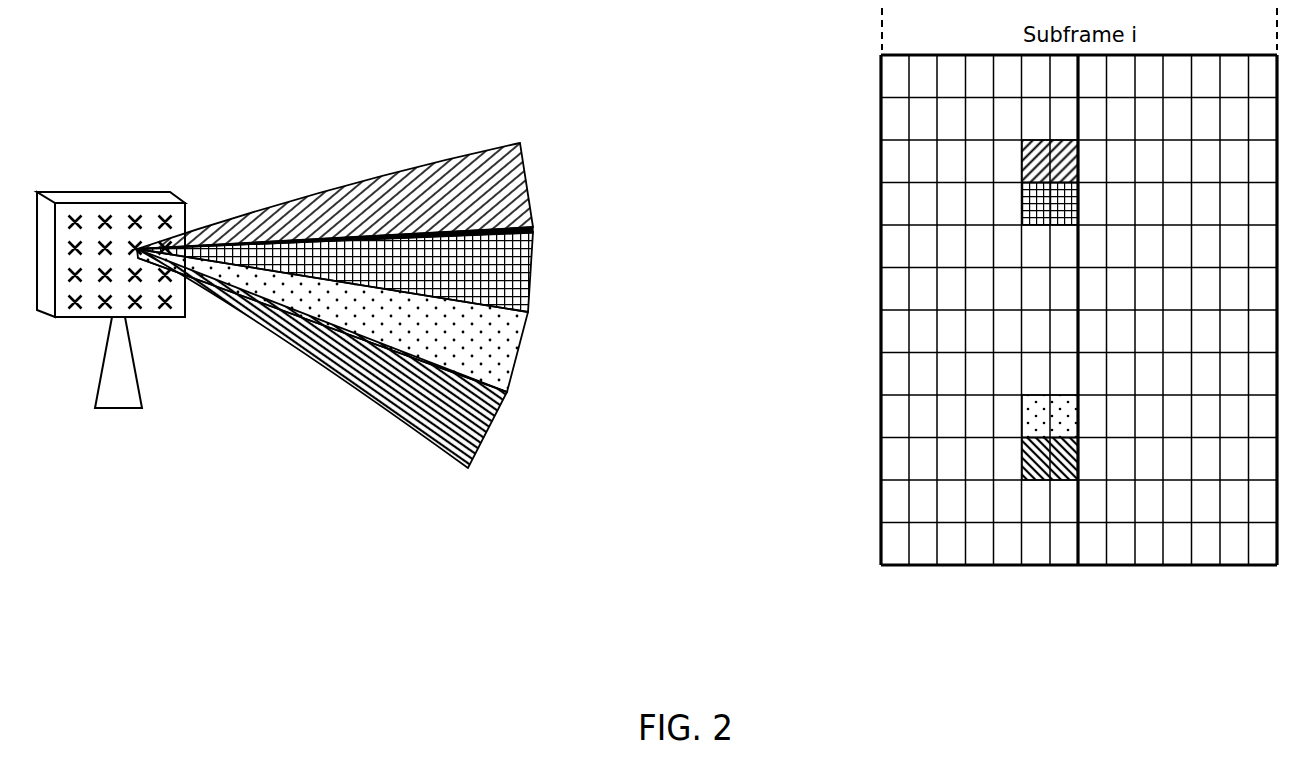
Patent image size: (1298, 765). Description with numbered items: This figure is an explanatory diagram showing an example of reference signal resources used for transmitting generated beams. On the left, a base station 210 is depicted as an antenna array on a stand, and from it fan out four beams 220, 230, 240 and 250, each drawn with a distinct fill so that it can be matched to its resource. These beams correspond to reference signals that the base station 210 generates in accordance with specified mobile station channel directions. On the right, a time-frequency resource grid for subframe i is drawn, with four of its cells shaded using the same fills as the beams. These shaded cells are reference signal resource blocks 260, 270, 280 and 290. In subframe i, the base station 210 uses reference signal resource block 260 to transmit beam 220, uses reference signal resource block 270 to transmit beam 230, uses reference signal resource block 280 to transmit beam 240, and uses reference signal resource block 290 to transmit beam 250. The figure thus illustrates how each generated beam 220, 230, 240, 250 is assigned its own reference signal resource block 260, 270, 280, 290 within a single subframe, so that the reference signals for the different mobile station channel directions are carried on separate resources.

The base station 210 is at (103, 192).
The beam 220 is at (528, 190).
The beam 230 is at (530, 283).
The beam 240 is at (517, 357).
The beam 250 is at (500, 450).
The reference signal resource block 260 is at (1023, 162).
The reference signal resource block 270 is at (1020, 205).
The reference signal resource block 280 is at (1020, 417).
The reference signal resource block 290 is at (1020, 460).